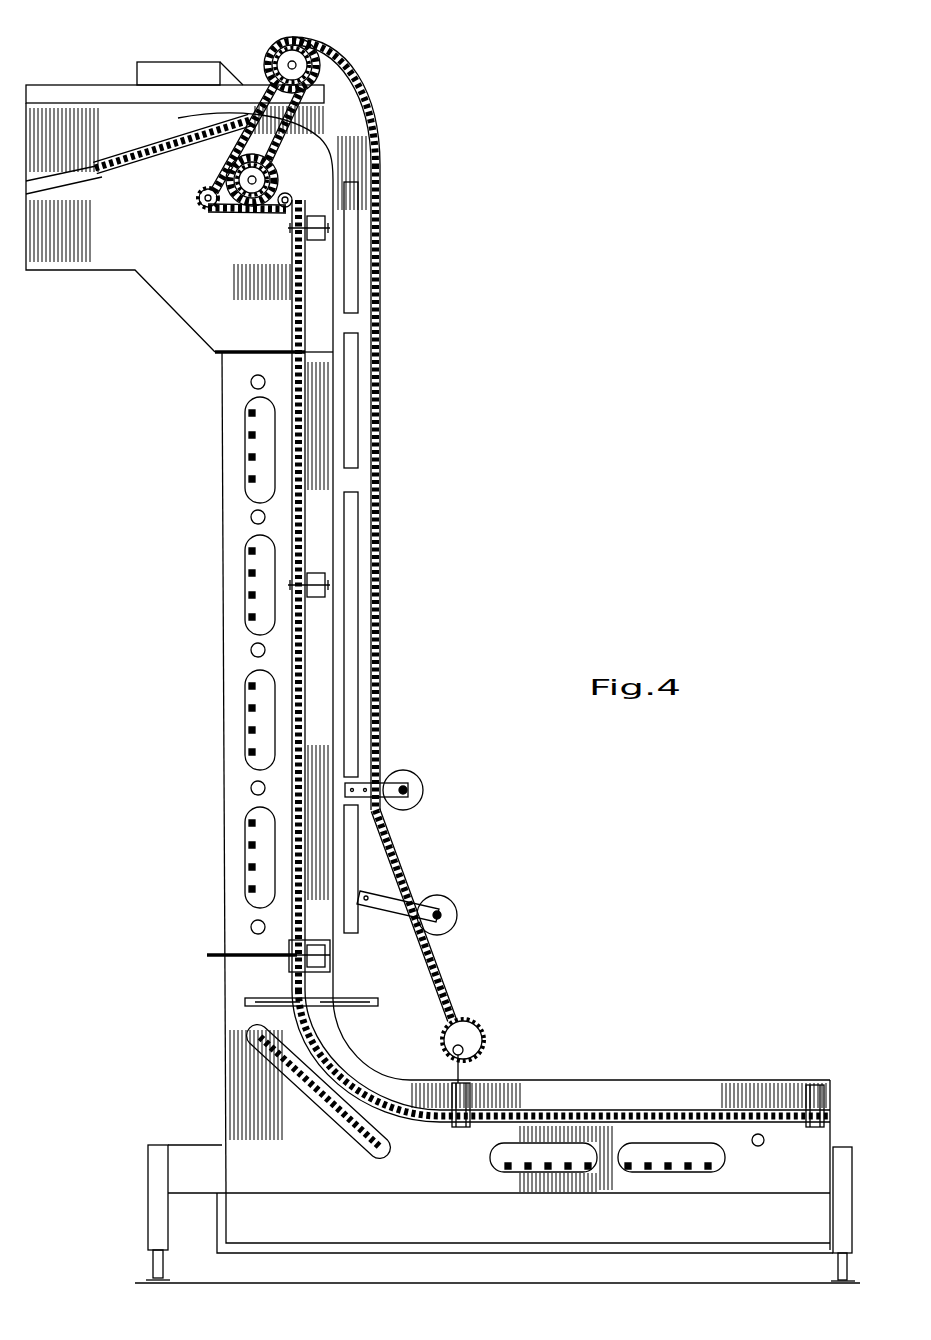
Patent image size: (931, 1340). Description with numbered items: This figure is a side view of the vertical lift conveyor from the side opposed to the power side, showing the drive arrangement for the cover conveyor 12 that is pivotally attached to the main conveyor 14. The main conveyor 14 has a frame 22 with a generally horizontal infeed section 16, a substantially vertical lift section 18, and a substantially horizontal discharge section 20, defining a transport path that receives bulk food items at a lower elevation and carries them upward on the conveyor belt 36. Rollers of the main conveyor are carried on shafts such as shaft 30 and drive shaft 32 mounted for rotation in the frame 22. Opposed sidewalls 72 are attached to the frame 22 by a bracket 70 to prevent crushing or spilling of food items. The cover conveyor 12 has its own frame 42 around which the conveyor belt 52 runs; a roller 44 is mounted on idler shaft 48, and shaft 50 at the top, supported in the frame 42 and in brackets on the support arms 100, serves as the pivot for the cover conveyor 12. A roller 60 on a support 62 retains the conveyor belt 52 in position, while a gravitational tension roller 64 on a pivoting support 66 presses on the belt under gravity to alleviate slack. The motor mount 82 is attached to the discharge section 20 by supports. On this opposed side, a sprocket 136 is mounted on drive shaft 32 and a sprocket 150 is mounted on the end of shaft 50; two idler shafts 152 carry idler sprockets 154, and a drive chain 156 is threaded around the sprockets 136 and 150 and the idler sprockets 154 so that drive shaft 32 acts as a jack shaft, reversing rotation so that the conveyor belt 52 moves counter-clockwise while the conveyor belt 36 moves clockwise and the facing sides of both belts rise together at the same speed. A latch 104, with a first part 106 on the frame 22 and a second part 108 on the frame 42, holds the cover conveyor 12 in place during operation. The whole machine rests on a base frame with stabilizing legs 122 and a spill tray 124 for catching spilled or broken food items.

The support arms 100 is at (65, 85).
The motor mount 82 is at (158, 63).
The discharge section 20 is at (95, 178).
The drive chain 156 is at (242, 118).
The sprocket 136 is at (305, 140).
The shaft 50 is at (280, 45).
The drive shaft 32 is at (258, 180).
The idler shafts 152 is at (282, 210).
The idler sprockets 154 is at (203, 198).
The sprocket 150 is at (312, 42).
The cover conveyor 12 is at (383, 352).
The main conveyor 14 is at (222, 442).
The frame 22 is at (250, 522).
The lift section 18 is at (250, 652).
The conveyor belt 36 is at (255, 868).
The frame 42 is at (352, 480).
The conveyor belt 52 is at (385, 512).
The sidewalls 72 is at (320, 645).
The bracket 70 is at (330, 228).
The support 62 is at (390, 782).
The roller 60 is at (423, 790).
The support 66 is at (437, 896).
The gravitational tension roller 64 is at (457, 915).
The first part 106 is at (222, 956).
The second part 108 is at (378, 1002).
The latch 104 is at (256, 1037).
The roller 44 is at (475, 1028).
The idler shaft 48 is at (463, 1050).
The infeed section 16 is at (613, 1112).
The shaft 30 is at (758, 1135).
The spill tray 124 is at (388, 1243).
The stabilizing legs 122 is at (843, 1147).